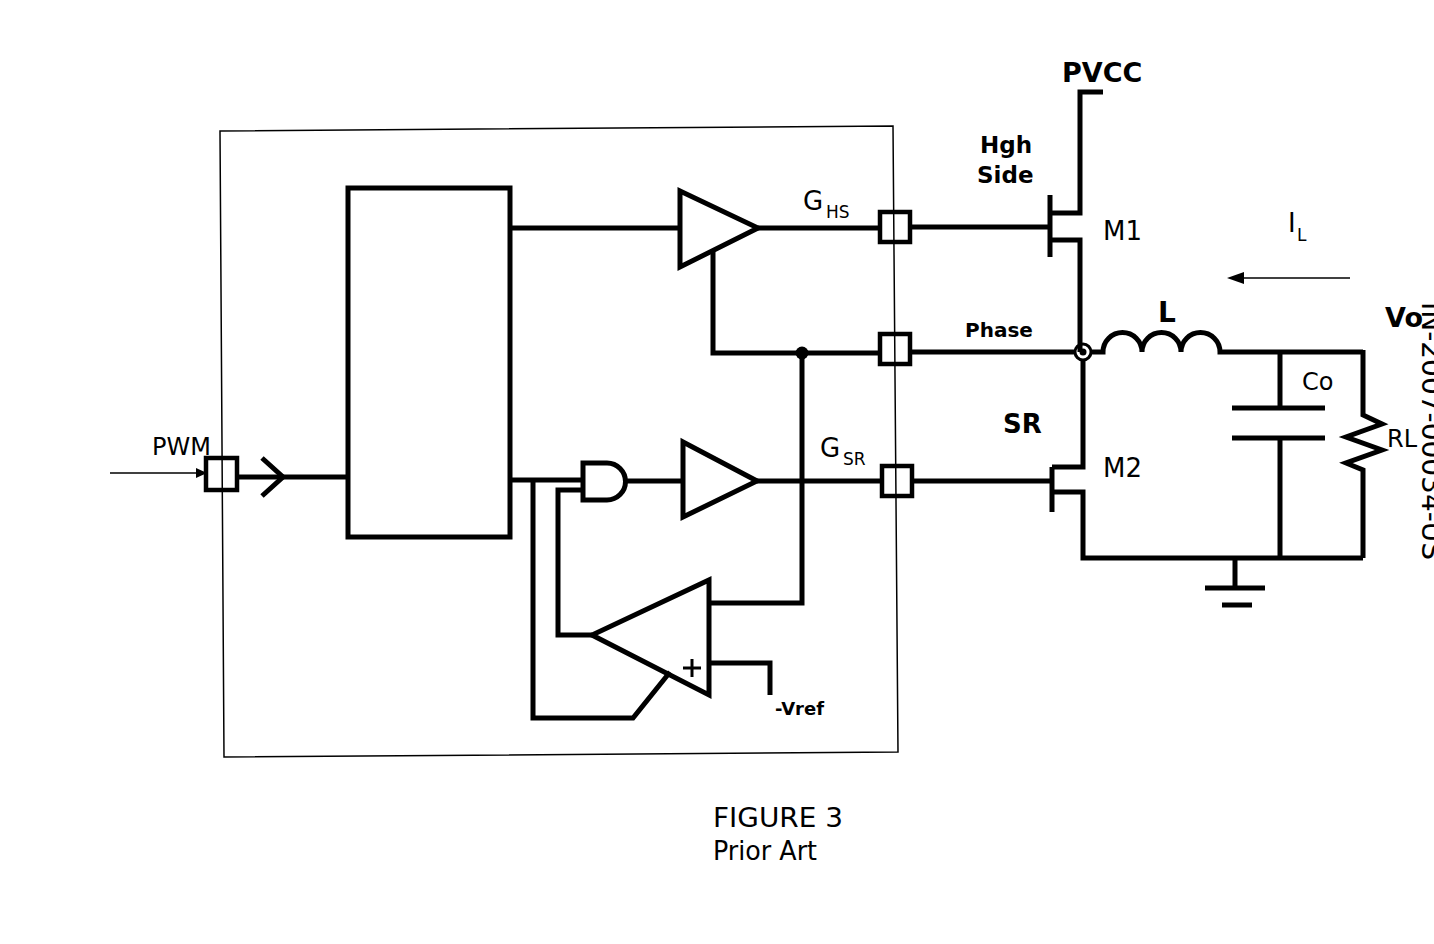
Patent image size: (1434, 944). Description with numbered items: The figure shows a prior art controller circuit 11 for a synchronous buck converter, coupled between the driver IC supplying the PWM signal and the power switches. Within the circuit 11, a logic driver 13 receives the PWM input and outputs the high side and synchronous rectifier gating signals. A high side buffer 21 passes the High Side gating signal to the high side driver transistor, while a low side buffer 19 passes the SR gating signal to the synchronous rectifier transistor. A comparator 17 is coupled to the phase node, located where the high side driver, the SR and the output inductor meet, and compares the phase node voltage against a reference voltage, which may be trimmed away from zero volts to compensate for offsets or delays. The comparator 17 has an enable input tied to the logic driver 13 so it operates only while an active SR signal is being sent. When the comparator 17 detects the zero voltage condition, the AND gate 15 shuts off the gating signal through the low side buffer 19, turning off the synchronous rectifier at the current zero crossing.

The circuit 11 is at (300, 191).
The logic driver 13 is at (425, 229).
The AND gate 15 is at (607, 471).
The comparator 17 is at (632, 628).
The low side buffer 19 is at (710, 453).
The high side buffer 21 is at (706, 217).